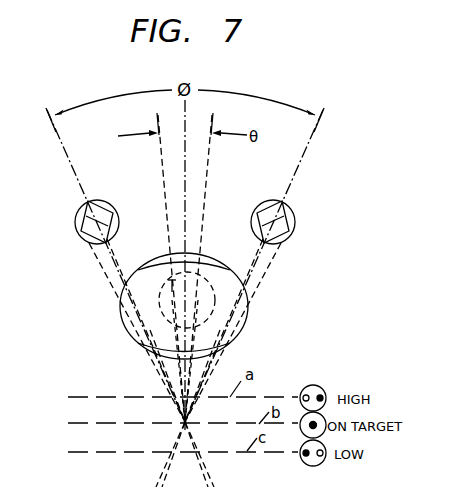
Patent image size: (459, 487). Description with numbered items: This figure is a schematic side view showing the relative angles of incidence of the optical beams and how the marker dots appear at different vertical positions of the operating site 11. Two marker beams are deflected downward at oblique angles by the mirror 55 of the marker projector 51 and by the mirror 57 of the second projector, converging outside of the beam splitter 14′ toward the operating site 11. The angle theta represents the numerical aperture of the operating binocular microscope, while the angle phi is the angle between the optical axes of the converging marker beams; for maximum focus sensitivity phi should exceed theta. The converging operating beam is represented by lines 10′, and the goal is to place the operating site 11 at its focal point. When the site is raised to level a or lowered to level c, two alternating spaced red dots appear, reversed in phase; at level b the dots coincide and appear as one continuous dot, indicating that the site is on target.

The mirror 55 is at (76, 229).
The marker projector 51 is at (84, 243).
The mirror 57 is at (297, 231).
The converging operating beam 10′ is at (150, 346).
The beam splitter 14′ is at (243, 323).
The operating site 11 is at (184, 422).